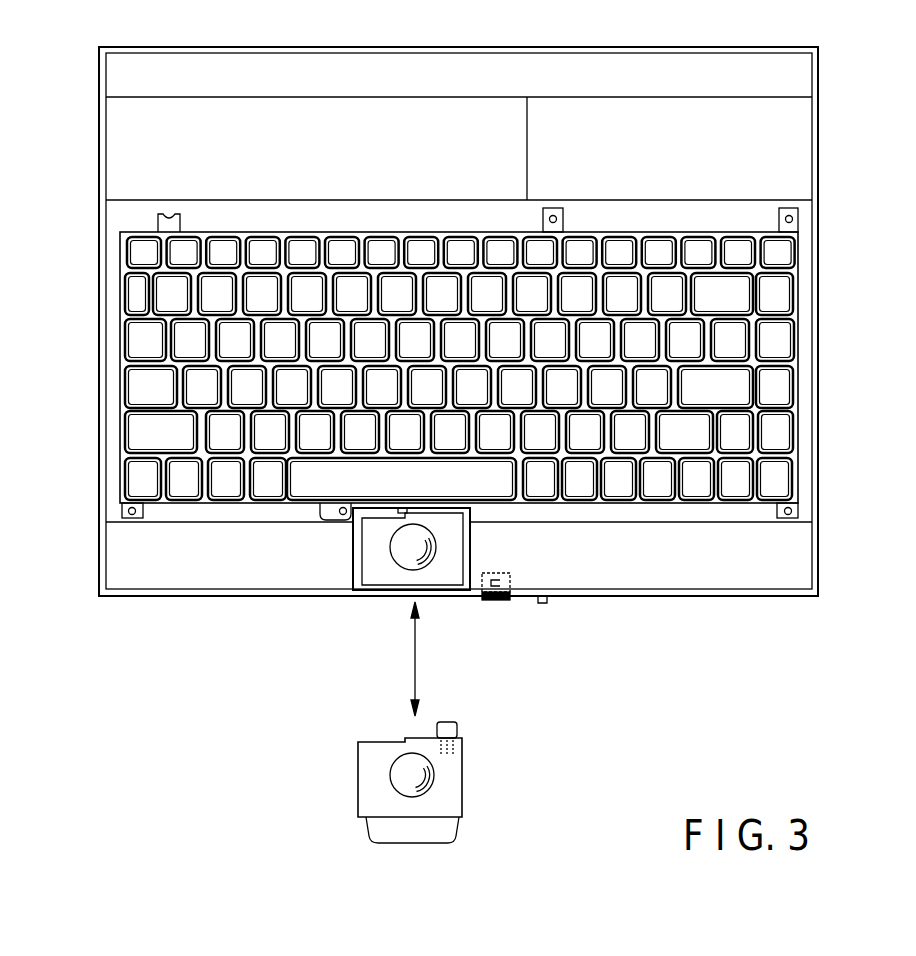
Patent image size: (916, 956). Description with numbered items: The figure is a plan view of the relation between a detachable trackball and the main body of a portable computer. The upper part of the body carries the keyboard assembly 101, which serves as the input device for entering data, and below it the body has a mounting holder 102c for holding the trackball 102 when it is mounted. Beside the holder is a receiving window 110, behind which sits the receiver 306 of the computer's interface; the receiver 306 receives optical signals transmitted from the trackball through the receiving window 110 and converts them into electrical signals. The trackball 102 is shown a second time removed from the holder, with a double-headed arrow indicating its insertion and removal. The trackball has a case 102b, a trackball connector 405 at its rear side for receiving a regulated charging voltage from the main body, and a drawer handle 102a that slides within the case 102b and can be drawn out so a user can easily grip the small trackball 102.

The keyboard assembly 101 is at (777, 388).
The trackball 102 is at (380, 575).
The drawer handle 102a is at (378, 828).
The case 102b is at (462, 783).
The mounting holder 102c is at (352, 575).
The receiving window 110 is at (493, 598).
The receiver 306 is at (510, 600).
The trackball connector 405 is at (450, 722).